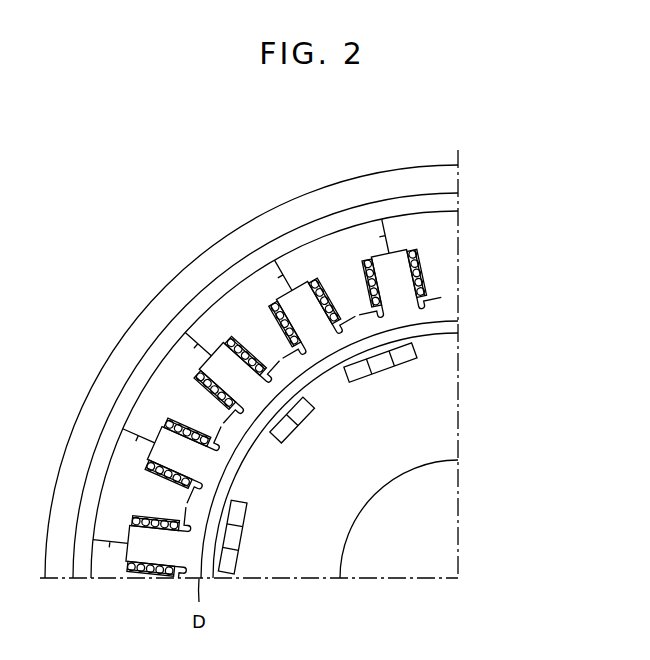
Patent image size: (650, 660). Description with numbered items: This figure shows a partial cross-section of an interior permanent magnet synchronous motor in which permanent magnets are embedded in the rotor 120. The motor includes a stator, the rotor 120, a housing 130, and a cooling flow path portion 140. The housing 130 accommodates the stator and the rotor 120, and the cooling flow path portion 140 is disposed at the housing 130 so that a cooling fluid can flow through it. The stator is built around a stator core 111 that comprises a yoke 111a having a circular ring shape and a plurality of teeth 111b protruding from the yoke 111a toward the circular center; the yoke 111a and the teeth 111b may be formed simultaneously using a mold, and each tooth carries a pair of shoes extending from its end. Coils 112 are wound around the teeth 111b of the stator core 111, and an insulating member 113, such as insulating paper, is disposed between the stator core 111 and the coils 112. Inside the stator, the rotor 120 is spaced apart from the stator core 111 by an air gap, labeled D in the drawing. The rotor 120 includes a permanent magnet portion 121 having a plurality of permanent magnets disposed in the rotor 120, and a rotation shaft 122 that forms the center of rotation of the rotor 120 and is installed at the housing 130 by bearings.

The cooling flow path portion 140 is at (452, 170).
The housing 130 is at (452, 195).
The stator core 111 is at (550, 222).
The yoke 111a is at (436, 231).
The coils 112 is at (315, 280).
The insulating member 113 is at (270, 312).
The teeth 111b is at (438, 272).
The permanent magnet portion 121 is at (386, 362).
The rotor 120 is at (452, 413).
The rotation shaft 122 is at (452, 521).